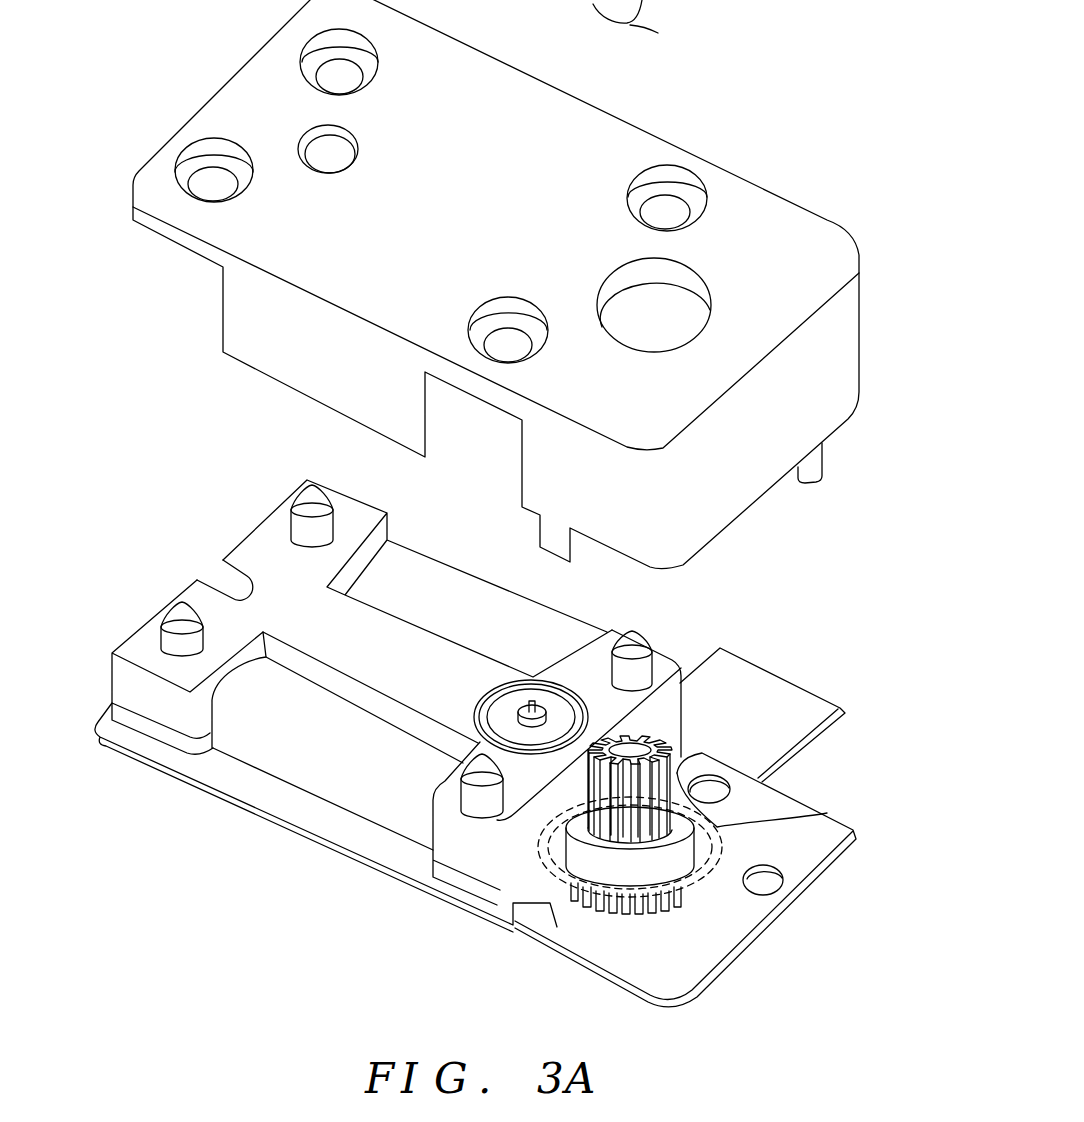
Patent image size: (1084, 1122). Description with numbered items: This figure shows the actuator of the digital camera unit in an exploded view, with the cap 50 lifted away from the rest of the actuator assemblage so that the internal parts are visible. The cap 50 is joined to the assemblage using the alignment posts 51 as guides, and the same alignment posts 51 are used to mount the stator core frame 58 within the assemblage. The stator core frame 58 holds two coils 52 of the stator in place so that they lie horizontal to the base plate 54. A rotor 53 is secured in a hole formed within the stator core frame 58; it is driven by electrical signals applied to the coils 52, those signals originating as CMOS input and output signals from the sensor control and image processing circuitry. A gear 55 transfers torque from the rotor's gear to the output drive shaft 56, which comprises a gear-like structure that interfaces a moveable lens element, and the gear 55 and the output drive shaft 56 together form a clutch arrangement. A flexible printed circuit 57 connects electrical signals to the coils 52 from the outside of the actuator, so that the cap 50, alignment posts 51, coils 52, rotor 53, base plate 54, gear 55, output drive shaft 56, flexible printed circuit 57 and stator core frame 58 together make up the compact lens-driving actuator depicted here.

The cap 50 is at (278, 352).
The alignment posts 51 is at (160, 633).
The coils 52 is at (457, 570).
The rotor 53 is at (533, 727).
The base plate 54 is at (760, 947).
The gear 55 is at (612, 912).
The output drive shaft 56 is at (827, 813).
The flexible printed circuit 57 is at (777, 673).
The stator core frame 58 is at (120, 683).